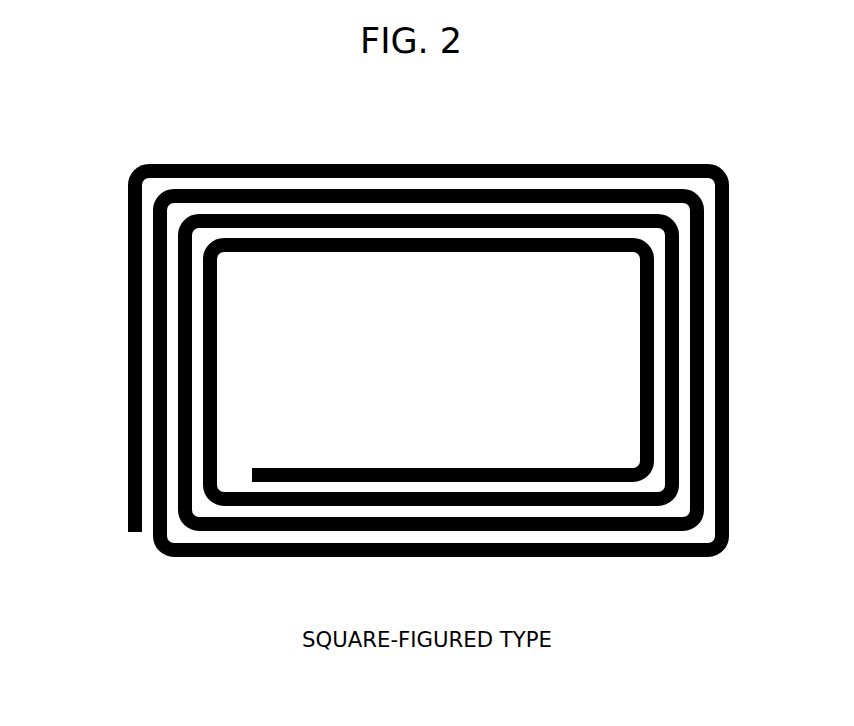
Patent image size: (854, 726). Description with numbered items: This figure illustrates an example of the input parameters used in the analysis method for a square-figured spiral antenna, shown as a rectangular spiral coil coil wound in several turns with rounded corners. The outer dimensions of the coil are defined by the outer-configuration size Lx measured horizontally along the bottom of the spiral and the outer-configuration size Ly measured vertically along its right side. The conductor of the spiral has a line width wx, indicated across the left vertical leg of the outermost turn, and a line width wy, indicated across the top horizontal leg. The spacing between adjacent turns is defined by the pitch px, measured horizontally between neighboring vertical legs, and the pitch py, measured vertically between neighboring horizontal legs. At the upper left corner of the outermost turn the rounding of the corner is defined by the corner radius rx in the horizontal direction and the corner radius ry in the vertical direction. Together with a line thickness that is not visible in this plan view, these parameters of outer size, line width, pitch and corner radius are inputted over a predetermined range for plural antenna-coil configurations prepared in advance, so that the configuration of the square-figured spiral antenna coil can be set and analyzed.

The outer-configuration size in x direction Lx is at (727, 545).
The outer-configuration size in y direction Ly is at (715, 167).
The line width in x direction wx is at (255, 337).
The line width in y direction wy is at (327, 290).
The pitch in x direction px is at (255, 410).
The pitch in y direction py is at (377, 290).
The corner radius in x direction rx is at (190, 188).
The corner radius in y direction ry is at (153, 216).
The square-figured spiral antenna coil is at (428, 360).